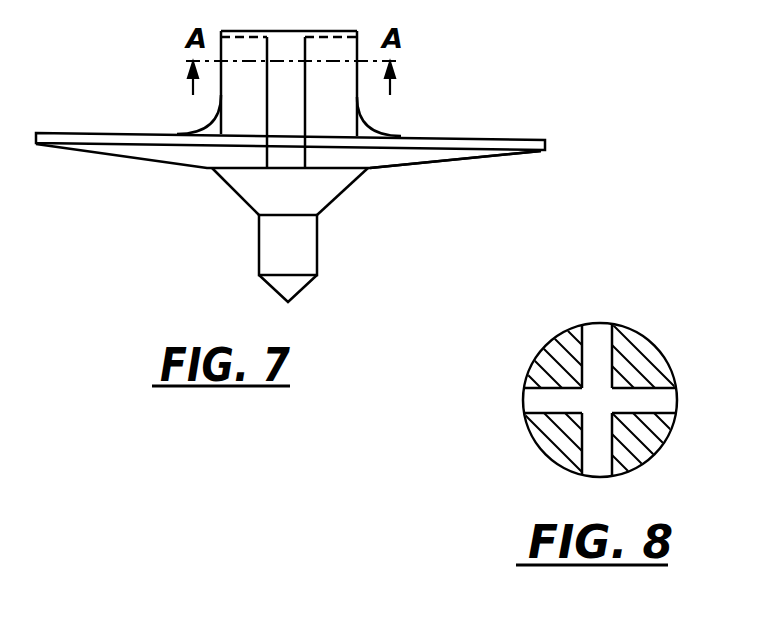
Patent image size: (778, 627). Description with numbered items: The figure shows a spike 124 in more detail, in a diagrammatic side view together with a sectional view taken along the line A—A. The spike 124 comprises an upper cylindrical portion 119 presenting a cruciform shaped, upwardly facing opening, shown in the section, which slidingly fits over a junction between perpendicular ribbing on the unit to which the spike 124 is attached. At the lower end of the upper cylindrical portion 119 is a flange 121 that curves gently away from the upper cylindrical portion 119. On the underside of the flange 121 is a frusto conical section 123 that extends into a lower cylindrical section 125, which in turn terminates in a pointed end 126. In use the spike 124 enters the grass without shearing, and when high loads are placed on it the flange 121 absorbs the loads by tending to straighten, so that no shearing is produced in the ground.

In FIG. 7, the upper cylindrical portion 119 is at (347, 95).
In FIG. 7, the flange 121 is at (530, 140).
In FIG. 8, the flange 121 is at (607, 327).
In FIG. 7, the frusto conical section 123 is at (253, 190).
In FIG. 7, the spike 124 is at (477, 166).
In FIG. 7, the lower cylindrical section 125 is at (300, 238).
In FIG. 7, the pointed end 126 is at (290, 288).